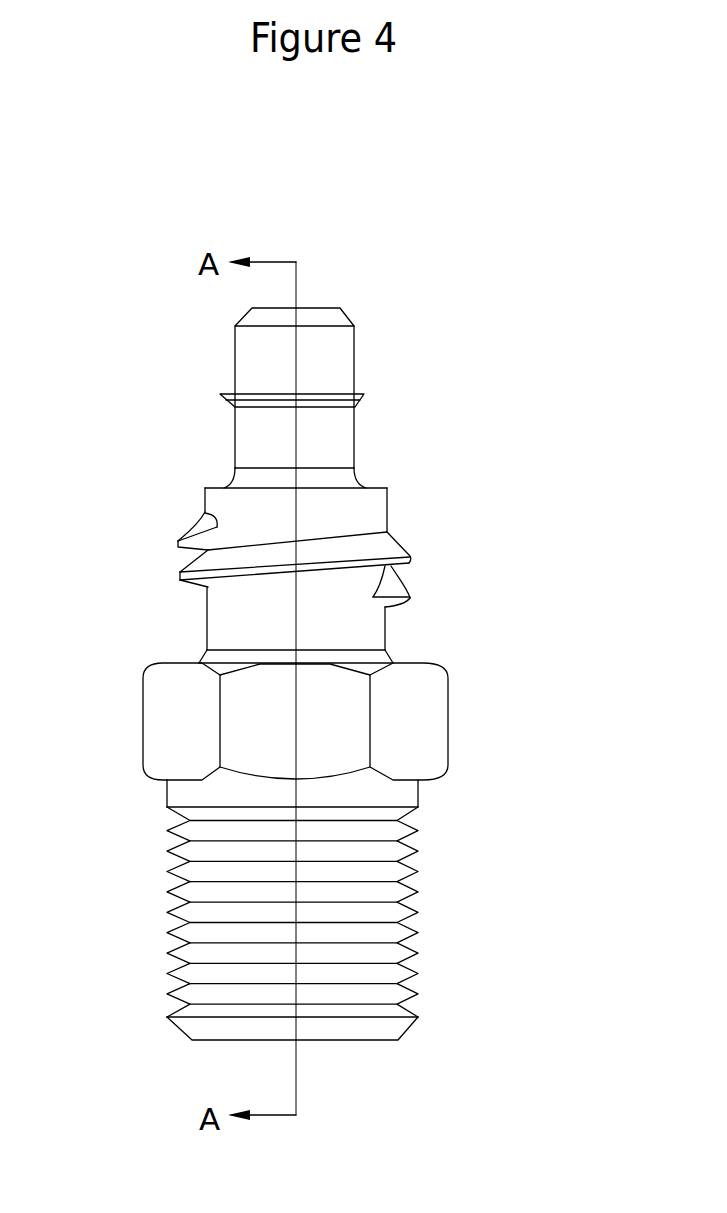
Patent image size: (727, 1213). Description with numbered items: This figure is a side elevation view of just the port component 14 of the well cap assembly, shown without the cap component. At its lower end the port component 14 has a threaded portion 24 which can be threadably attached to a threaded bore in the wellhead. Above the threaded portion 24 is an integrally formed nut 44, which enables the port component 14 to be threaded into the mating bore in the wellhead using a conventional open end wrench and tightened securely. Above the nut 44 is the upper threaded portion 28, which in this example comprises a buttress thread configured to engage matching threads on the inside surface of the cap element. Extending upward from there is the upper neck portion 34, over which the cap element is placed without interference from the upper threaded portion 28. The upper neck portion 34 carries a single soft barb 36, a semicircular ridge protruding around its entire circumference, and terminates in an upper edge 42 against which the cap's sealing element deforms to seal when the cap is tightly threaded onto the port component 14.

The port component 14 is at (507, 238).
The upper edge 42 is at (335, 317).
The upper neck portion 34 is at (332, 363).
The barb 36 is at (233, 407).
The upper threaded portion 28 is at (382, 543).
The nut 44 is at (163, 705).
The threaded portion 24 is at (207, 930).